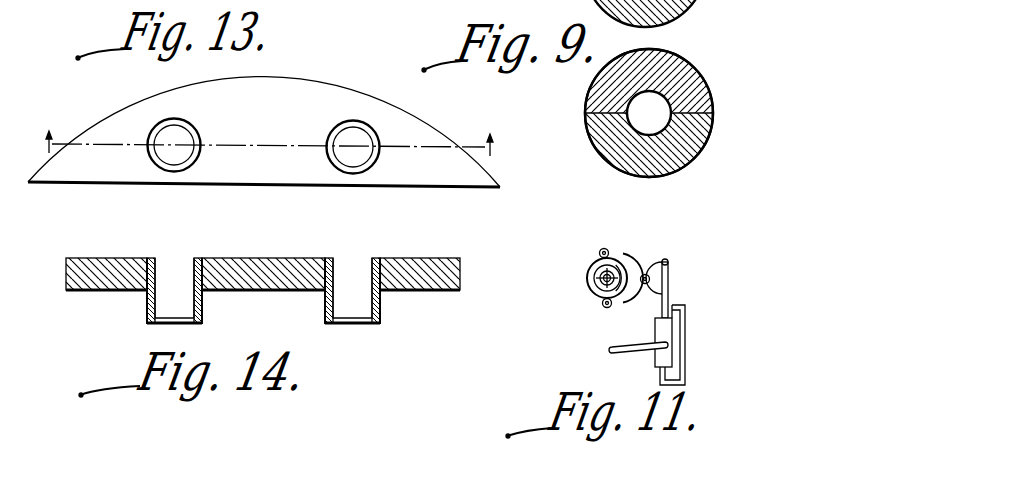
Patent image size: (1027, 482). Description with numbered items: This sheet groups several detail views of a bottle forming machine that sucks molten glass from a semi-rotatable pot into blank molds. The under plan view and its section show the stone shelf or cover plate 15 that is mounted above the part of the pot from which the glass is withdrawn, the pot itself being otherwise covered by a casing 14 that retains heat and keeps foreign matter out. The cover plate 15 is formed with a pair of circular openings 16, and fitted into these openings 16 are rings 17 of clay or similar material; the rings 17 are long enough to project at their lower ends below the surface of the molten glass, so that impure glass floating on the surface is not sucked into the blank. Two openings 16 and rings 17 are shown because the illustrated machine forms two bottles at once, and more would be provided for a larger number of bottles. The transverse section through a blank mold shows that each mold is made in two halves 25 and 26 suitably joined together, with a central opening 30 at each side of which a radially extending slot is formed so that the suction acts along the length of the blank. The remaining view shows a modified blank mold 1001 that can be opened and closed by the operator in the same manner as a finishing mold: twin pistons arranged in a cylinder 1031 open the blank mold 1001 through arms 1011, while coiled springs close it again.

In FIG. 13, the casing 14 is at (273, 148).
In FIG. 13, the stone cover plate 15 is at (312, 100).
In FIG. 13, the circular openings 16 is at (378, 135).
In FIG. 14, the circular openings 16 is at (216, 250).
In FIG. 13, the rings 17 is at (348, 168).
In FIG. 14, the rings 17 is at (160, 307).
In FIG. 9, the blank mold half 25 is at (687, 80).
In FIG. 9, the blank mold half 26 is at (688, 143).
In FIG. 9, the central opening 30 is at (657, 115).
In FIG. 11, the blank mold 1001 is at (586, 296).
In FIG. 11, the arms 1011 is at (659, 261).
In FIG. 11, the cylinder 1031 is at (688, 322).